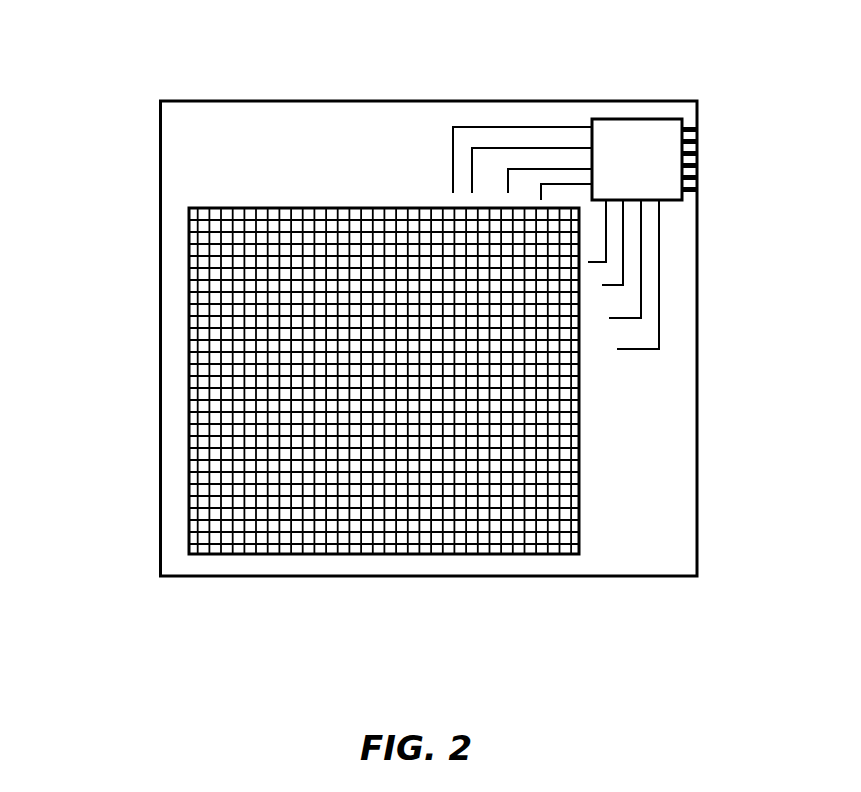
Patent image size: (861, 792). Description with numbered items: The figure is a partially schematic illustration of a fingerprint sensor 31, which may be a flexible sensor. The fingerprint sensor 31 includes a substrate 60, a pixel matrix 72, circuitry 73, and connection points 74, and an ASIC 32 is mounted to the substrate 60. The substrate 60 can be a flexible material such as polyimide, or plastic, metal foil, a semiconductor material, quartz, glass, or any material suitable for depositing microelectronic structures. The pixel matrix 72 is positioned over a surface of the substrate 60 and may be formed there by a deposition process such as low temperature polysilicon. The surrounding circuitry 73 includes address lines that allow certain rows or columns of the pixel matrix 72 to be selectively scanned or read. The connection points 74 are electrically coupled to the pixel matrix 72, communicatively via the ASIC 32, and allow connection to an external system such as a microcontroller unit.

The fingerprint sensor 31 is at (126, 73).
The substrate 60 is at (673, 477).
The pixel matrix 72 is at (171, 300).
The circuitry 73 is at (503, 110).
The ASIC 32 is at (647, 128).
The connection points 74 is at (690, 212).